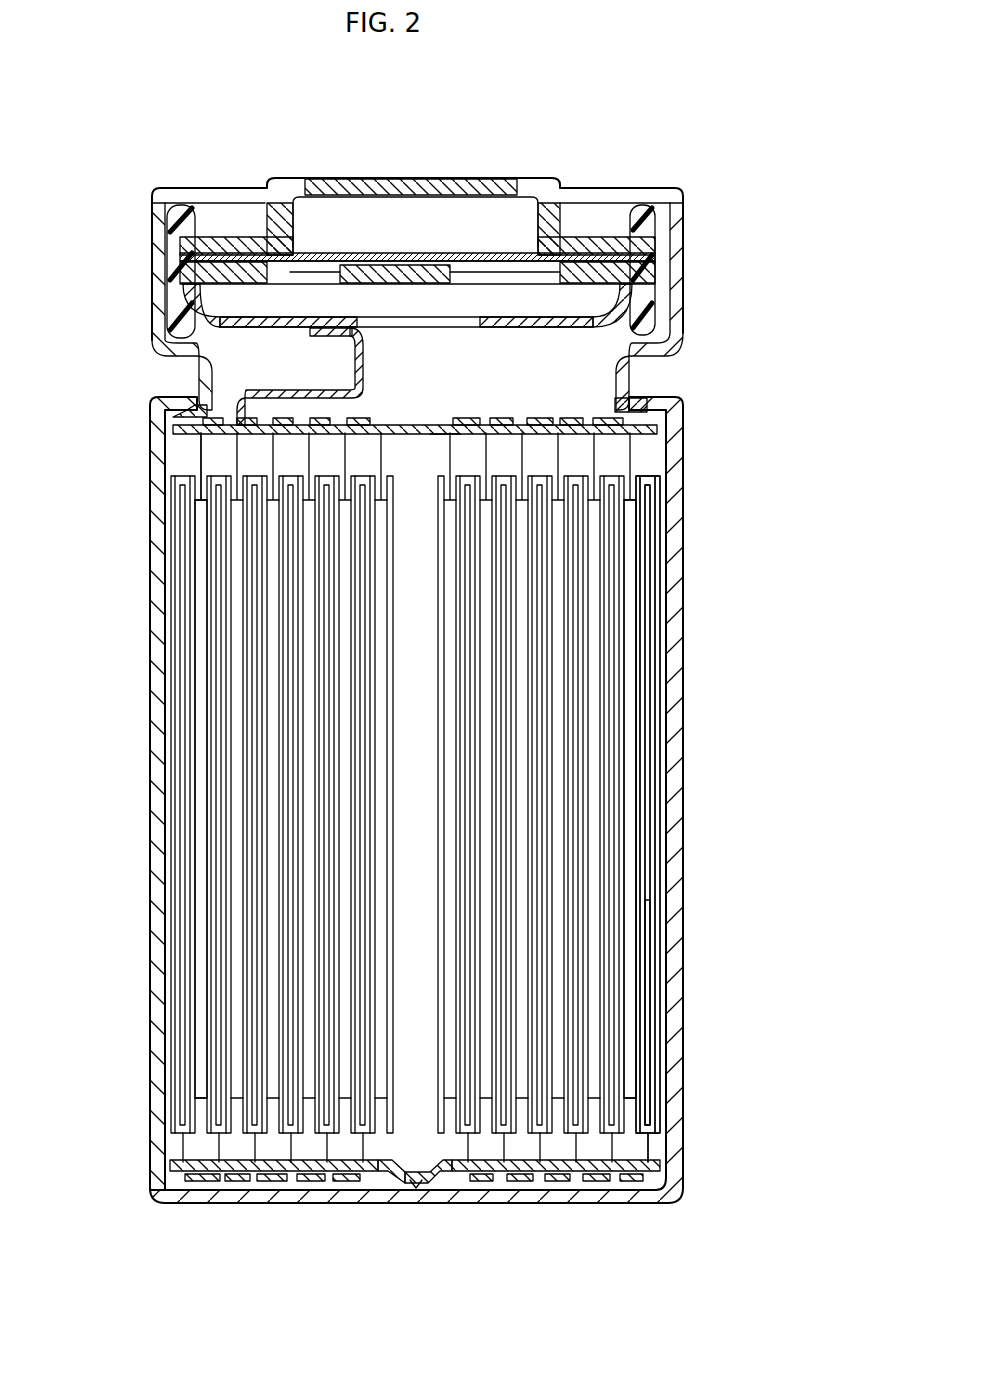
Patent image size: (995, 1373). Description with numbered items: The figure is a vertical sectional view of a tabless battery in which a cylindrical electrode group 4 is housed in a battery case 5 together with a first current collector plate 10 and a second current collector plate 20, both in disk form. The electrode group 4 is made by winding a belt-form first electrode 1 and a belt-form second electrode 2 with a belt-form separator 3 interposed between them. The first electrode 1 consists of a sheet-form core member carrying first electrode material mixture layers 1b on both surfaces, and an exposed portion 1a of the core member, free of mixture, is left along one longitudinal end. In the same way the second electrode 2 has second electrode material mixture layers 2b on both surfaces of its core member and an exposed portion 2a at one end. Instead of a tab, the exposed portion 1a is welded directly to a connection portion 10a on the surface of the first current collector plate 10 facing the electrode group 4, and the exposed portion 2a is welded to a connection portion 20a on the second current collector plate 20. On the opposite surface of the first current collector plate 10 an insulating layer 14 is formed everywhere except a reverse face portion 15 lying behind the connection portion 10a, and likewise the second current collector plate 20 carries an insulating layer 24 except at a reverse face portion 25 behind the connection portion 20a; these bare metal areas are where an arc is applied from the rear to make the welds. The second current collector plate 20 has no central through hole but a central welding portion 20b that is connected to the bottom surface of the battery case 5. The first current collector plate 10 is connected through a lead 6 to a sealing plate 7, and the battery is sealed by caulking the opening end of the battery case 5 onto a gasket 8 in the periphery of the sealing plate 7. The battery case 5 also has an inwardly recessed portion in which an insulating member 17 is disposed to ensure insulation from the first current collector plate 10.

The first electrode 1 is at (632, 528).
The exposed portion of the first electrode core member 1a is at (200, 457).
The first electrode material mixture layers 1b is at (200, 523).
The second electrode 2 is at (650, 598).
The exposed portion of the second electrode core member 2a is at (652, 1142).
The second electrode material mixture layers 2b is at (652, 1085).
The separator 3 is at (637, 562).
The electrode group 4 is at (405, 797).
The battery case 5 is at (152, 832).
The lead 6 is at (353, 350).
The sealing plate 7 is at (445, 180).
The gasket 8 is at (648, 216).
The first current collector plate 10 is at (650, 432).
The connection portion 10a is at (445, 436).
The insulating layer 14 is at (623, 376).
The reverse face portion 15 is at (478, 418).
The insulating member 17 is at (178, 427).
The second current collector plate 20 is at (568, 1170).
The connection portion 20a is at (432, 1177).
The central welding portion 20b is at (385, 1180).
The insulating layer 24 is at (630, 1173).
The reverse face portion 25 is at (220, 1180).